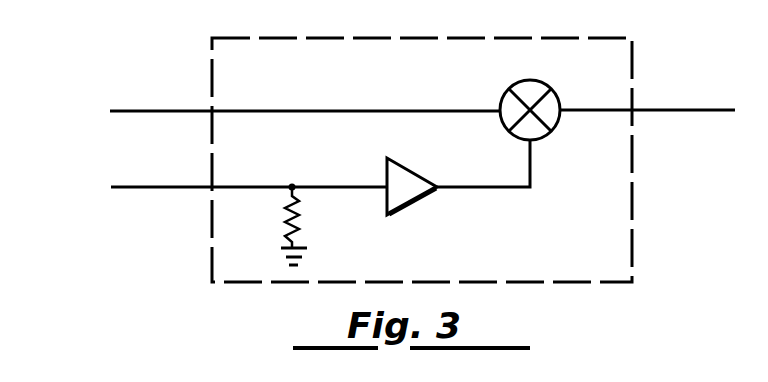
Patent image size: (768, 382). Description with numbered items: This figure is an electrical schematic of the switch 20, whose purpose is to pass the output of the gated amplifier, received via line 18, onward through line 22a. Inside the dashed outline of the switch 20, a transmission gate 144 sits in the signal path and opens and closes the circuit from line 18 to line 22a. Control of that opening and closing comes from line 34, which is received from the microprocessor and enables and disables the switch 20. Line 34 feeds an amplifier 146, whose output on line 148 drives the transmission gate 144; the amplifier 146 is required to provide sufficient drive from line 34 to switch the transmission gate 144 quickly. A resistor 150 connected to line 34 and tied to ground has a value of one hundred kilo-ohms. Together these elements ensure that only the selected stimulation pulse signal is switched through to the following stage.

The line 18 is at (141, 111).
The line 34 is at (147, 187).
The transmission gate 144 is at (540, 82).
The line 22a is at (690, 110).
The amplifier 146 is at (407, 208).
The line 148 is at (509, 190).
The resistor 150 is at (297, 215).
The switch 20 is at (573, 283).